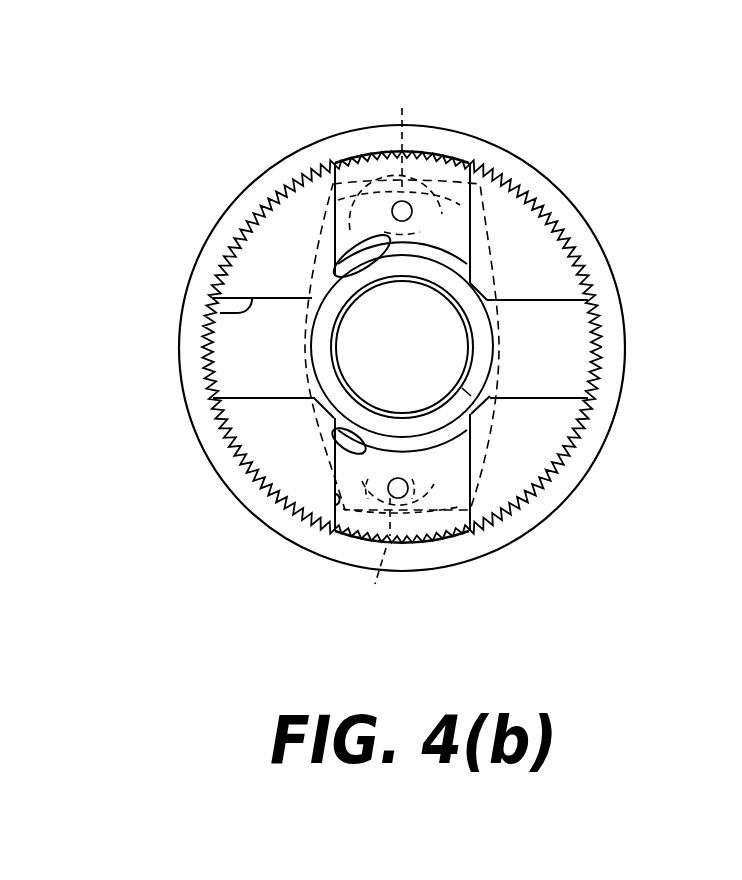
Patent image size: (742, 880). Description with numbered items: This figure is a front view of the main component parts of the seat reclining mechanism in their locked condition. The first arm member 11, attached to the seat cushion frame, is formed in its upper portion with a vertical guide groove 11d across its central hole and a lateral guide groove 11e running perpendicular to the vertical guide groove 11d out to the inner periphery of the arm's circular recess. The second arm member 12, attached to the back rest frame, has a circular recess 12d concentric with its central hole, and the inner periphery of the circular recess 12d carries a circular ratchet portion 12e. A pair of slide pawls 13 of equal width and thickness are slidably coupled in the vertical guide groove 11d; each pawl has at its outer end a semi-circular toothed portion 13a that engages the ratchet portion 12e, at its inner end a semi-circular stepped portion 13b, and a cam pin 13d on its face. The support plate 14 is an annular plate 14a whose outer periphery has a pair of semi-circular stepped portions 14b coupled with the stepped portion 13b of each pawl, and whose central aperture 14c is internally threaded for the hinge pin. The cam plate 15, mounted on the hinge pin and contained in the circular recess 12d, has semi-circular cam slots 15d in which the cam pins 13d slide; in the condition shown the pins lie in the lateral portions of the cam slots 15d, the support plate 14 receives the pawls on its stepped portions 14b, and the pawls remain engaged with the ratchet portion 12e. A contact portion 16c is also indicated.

The first arm member 11 is at (442, 348).
The second arm member 12 is at (586, 215).
The vertical guide groove 11d is at (338, 508).
The lateral guide groove 11e is at (243, 313).
The circular recess 12d is at (237, 413).
The circular ratchet portion 12e is at (380, 360).
The slide pawls 13 is at (333, 200).
The semi-circular toothed portion 13a is at (358, 155).
The semi-circular stepped portion 13b is at (336, 274).
The cam pin 13d is at (373, 344).
The support plate 14 is at (428, 345).
The annular plate 14a is at (485, 342).
The semi-circular stepped portions 14b is at (471, 262).
The central aperture 14c is at (595, 439).
The cam plate 15 is at (460, 340).
The semi-circular cam slots 15d is at (483, 190).
The contact portion 16c is at (463, 390).